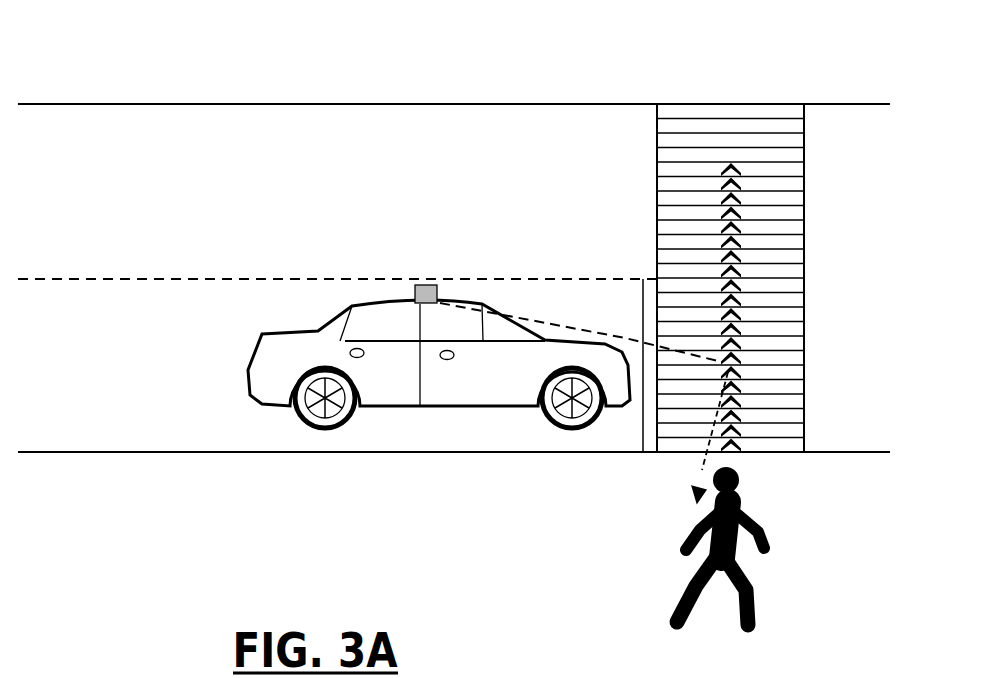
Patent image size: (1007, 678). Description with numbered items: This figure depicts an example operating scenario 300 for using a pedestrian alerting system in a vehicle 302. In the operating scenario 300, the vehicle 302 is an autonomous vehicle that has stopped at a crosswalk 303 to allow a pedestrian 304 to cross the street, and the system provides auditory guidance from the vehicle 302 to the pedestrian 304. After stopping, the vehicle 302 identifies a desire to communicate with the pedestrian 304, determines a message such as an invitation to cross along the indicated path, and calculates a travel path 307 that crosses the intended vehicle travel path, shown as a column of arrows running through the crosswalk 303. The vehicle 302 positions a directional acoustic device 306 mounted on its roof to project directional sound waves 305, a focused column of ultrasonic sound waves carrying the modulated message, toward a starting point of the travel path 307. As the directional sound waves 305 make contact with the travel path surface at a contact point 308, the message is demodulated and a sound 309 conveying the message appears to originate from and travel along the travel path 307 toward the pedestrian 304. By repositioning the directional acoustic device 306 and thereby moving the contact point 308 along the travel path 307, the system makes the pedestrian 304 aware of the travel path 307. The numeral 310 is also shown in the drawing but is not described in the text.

The operating scenario 300 is at (648, 65).
The vehicle 302 is at (250, 380).
The crosswalk 303 is at (788, 183).
The pedestrian 304 is at (688, 572).
The directional sound waves 305 is at (621, 336).
The directional acoustic device 306 is at (432, 284).
The travel path 307 is at (724, 260).
The contact point 308 is at (737, 362).
The sound 309 is at (700, 470).
The sidewalk 310 is at (848, 667).